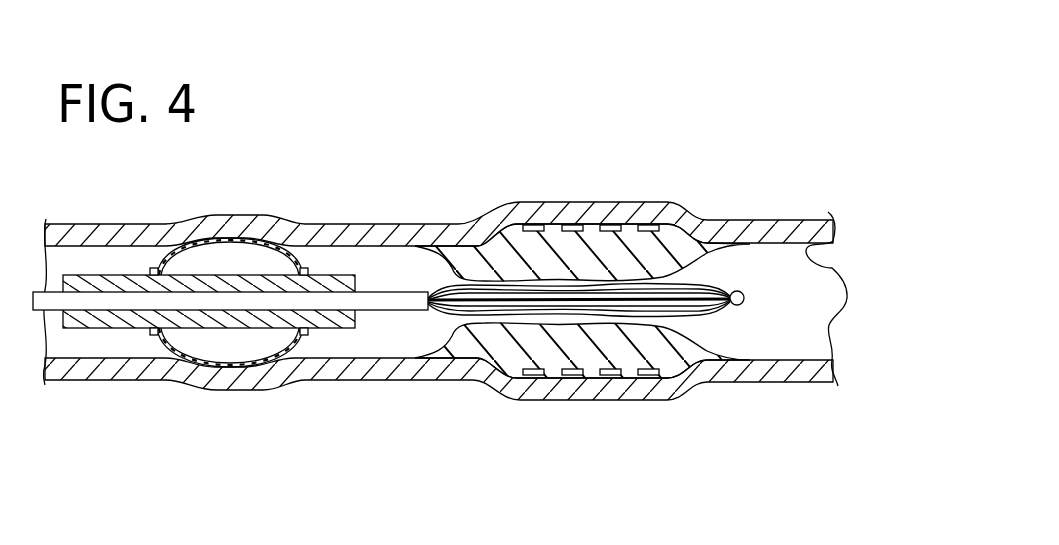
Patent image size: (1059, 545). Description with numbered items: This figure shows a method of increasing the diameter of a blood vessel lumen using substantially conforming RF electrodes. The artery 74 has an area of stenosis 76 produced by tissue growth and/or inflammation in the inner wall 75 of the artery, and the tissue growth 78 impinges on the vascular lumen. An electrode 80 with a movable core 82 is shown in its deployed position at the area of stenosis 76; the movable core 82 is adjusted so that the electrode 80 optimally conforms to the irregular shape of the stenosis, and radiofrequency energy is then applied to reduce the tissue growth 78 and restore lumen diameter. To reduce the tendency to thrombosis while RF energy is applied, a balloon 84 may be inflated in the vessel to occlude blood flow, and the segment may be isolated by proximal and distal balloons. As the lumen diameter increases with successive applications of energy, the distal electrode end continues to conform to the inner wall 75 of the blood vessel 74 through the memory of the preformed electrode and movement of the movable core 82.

The artery 74 is at (800, 314).
The inner wall 75 is at (832, 268).
The area of stenosis 76 is at (613, 423).
The tissue growth 78 is at (577, 267).
The electrode 80 is at (393, 292).
The movable core 82 is at (472, 296).
The balloon 84 is at (285, 254).